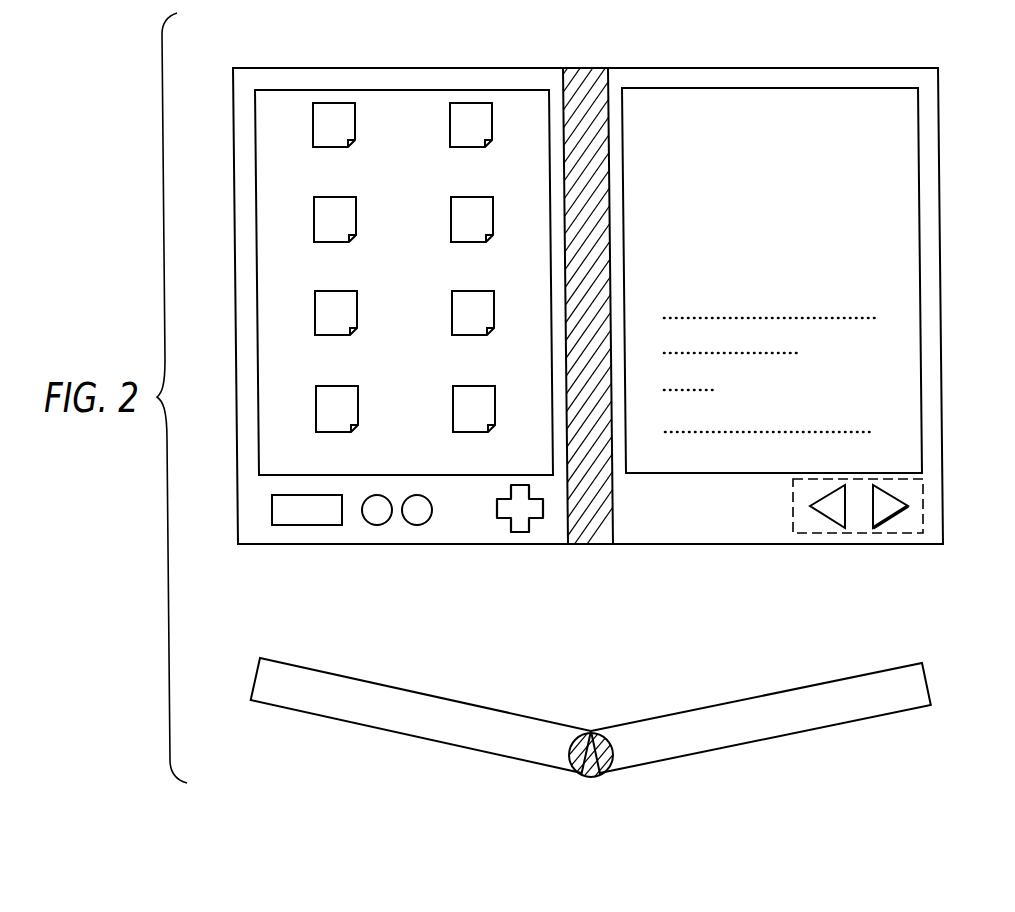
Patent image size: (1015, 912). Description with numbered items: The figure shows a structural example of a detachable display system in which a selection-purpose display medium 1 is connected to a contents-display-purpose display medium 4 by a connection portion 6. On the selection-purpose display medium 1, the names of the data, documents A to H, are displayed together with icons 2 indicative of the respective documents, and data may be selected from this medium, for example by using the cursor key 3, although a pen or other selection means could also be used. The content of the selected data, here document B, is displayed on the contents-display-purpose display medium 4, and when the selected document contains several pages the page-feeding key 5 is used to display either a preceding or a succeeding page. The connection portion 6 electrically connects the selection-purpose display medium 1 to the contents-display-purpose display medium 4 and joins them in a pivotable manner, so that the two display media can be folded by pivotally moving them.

The selection-purpose display medium 1 is at (392, 392).
The icon 2 is at (292, 131).
The cursor key 3 is at (521, 532).
The contents-display-purpose display medium 4 is at (772, 88).
The page-feeding key 5 is at (923, 502).
The connection portion 6 is at (585, 68).